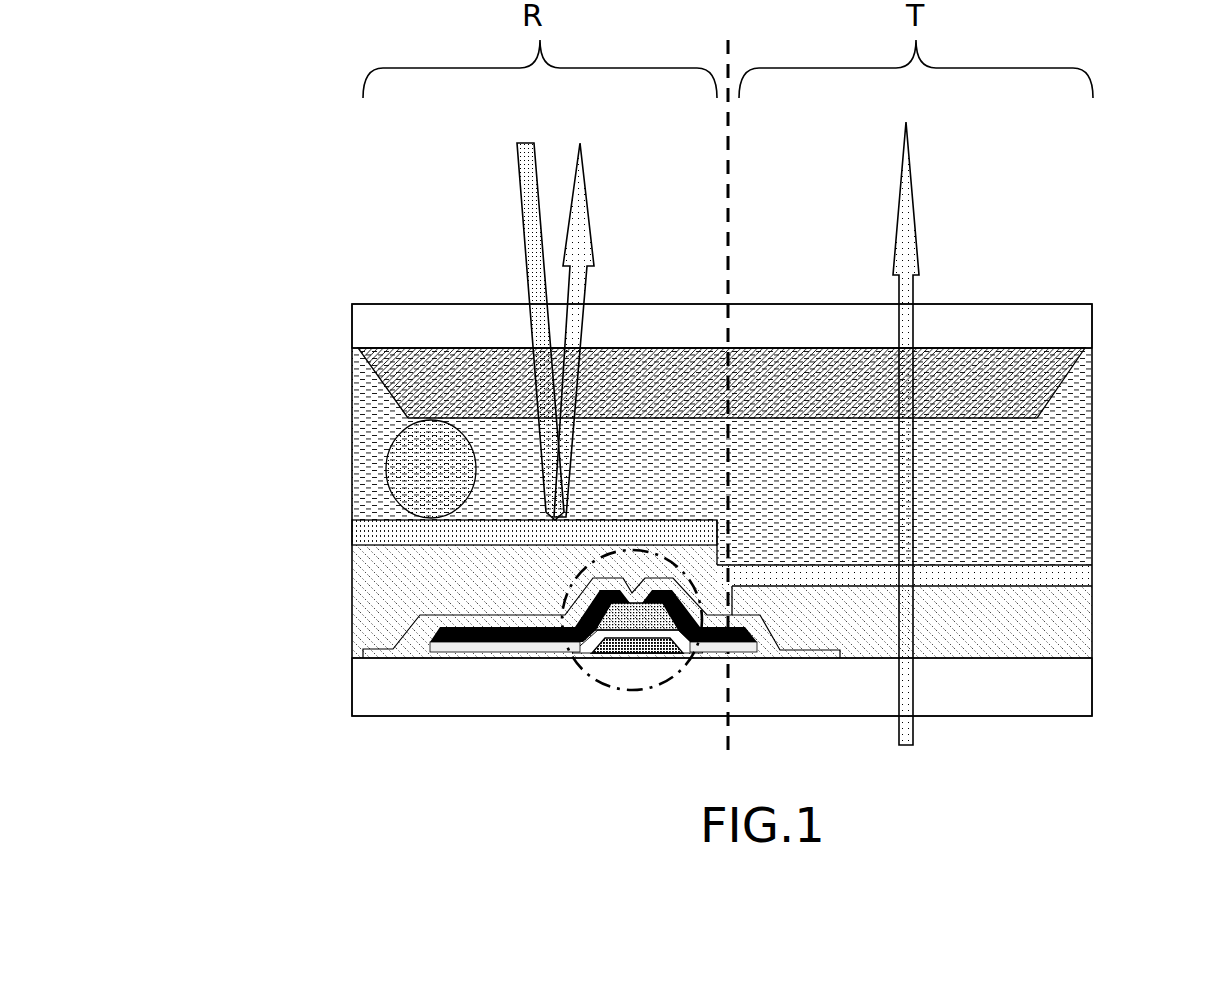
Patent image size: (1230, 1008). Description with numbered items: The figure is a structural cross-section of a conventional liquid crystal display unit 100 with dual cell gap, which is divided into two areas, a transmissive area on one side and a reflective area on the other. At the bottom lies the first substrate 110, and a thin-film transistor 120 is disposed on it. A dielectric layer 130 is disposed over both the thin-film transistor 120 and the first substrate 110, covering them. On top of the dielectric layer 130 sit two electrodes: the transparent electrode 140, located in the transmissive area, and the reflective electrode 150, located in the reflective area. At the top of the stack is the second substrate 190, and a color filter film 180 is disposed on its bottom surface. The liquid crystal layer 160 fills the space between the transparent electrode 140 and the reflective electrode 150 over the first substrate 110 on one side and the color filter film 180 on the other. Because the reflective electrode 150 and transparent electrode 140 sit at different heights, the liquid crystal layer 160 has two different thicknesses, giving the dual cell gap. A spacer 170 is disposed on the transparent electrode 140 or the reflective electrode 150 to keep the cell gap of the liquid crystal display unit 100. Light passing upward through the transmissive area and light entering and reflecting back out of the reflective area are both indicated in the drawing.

The liquid crystal display unit 100 is at (428, 763).
The first substrate 110 is at (398, 692).
The thin-film transistor 120 is at (566, 600).
The dielectric layer 130 is at (1070, 628).
The transparent electrode 140 is at (1070, 570).
The reflective electrode 150 is at (398, 530).
The liquid crystal layer 160 is at (1070, 450).
The spacer 170 is at (418, 478).
The color filter film 180 is at (428, 396).
The second substrate 190 is at (418, 320).